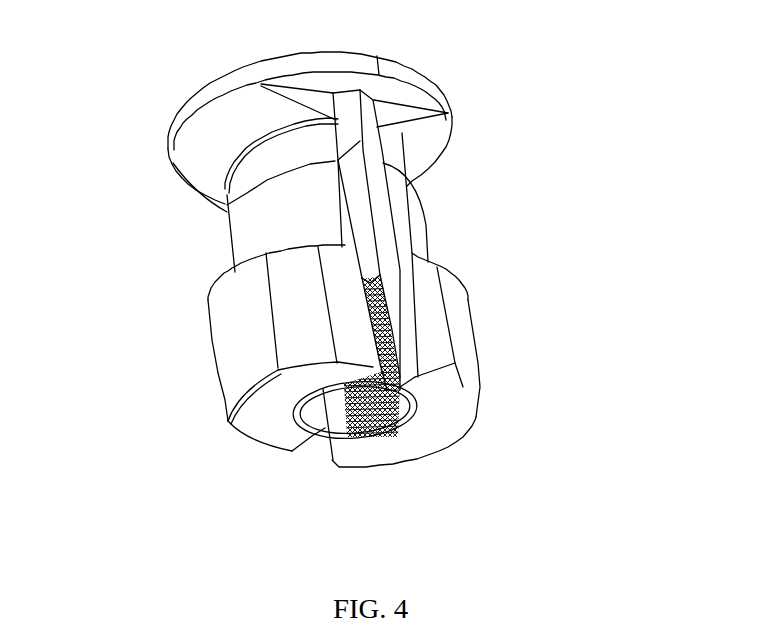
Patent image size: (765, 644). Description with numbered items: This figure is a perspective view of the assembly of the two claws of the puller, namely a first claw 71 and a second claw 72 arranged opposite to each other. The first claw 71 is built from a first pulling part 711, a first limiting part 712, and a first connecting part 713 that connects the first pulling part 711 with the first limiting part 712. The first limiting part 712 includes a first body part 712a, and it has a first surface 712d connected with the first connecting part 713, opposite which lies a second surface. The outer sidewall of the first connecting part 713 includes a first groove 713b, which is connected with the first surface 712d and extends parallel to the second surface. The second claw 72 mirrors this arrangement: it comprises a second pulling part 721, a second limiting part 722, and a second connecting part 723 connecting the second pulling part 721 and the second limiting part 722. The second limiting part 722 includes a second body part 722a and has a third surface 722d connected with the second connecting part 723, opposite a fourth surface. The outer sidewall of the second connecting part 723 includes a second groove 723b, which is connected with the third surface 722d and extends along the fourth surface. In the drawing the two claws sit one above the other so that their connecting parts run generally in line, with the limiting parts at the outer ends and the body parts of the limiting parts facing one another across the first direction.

The first claw 71 is at (285, 336).
The first pulling part 711 is at (247, 308).
The first limiting part 712 is at (214, 222).
The first body part 712a is at (170, 151).
The first surface 712d is at (213, 163).
The first connecting part 713 is at (301, 323).
The first groove 713b is at (242, 180).
The second claw 72 is at (399, 306).
The second pulling part 721 is at (450, 313).
The second limiting part 722 is at (399, 141).
The second body part 722a is at (452, 108).
The third surface 722d is at (423, 140).
The second connecting part 723 is at (465, 240).
The second groove 723b is at (445, 222).